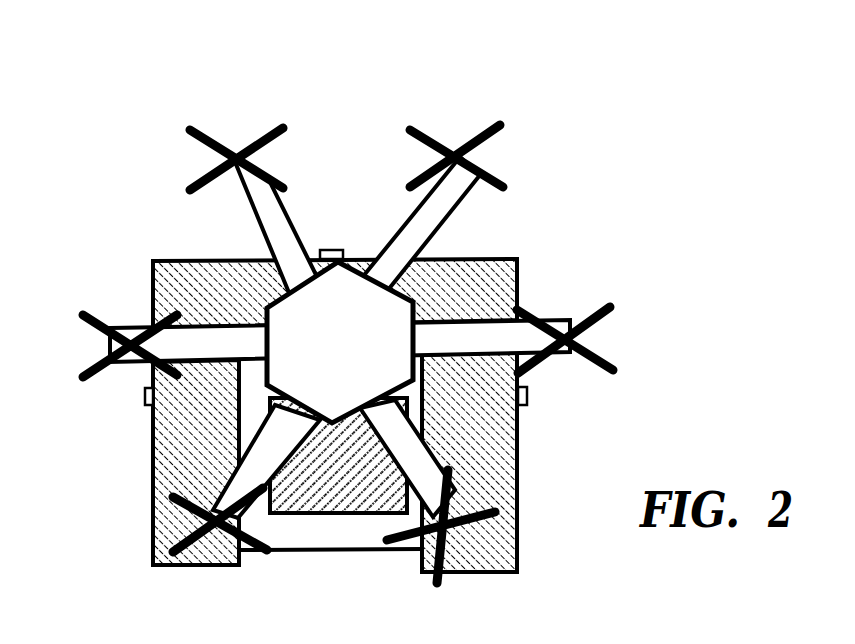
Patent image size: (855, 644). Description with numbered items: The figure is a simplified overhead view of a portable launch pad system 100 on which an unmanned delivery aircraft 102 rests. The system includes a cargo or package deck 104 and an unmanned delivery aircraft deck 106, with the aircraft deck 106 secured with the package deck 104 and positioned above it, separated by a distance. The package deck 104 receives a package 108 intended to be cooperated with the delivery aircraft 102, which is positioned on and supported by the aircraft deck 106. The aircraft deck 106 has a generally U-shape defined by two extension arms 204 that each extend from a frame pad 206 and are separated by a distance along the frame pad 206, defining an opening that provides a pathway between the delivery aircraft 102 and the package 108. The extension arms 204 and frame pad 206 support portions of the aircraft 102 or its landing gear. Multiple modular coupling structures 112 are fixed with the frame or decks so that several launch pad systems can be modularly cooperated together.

The portable launch pad system 100 is at (649, 222).
The unmanned delivery aircraft 102 is at (350, 288).
The package deck 104 is at (357, 540).
The aircraft deck 106 is at (333, 371).
The package 108 is at (307, 500).
The modular coupling structure 112 is at (333, 250).
The extension arm 204 is at (165, 463).
The frame pad 206 is at (227, 283).